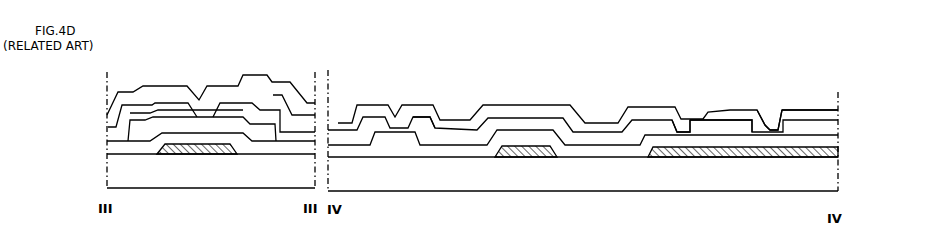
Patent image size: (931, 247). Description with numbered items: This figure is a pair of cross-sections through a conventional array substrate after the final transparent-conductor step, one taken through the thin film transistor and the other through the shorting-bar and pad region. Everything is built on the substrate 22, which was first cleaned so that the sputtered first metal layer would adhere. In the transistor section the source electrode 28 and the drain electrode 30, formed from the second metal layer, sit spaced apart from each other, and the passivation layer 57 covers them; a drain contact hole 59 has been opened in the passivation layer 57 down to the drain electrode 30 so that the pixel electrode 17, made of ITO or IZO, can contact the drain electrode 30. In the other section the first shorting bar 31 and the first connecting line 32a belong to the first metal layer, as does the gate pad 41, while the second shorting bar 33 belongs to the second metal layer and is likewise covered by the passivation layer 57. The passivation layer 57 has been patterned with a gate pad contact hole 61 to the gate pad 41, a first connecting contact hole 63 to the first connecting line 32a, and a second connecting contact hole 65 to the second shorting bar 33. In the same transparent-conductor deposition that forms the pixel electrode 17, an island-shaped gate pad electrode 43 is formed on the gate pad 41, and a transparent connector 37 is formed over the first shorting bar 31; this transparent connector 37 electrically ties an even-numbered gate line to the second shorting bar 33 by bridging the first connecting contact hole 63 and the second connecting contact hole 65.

The pixel electrode 17 is at (301, 90).
The substrate 22 is at (472, 130).
The source electrode 28 is at (164, 106).
The drain electrode 30 is at (227, 108).
The first shorting bar 31 is at (528, 160).
The first connecting line 32a is at (702, 115).
The second shorting bar 33 is at (357, 137).
The transparent connector 37 is at (450, 132).
The gate pad 41 is at (815, 147).
The gate pad electrode 43 is at (807, 113).
The passivation layer 57 is at (420, 127).
The drain contact hole 59 is at (270, 98).
The gate pad contact hole 61 is at (768, 124).
The first connecting contact hole 63 is at (682, 114).
The second connecting contact hole 65 is at (396, 112).